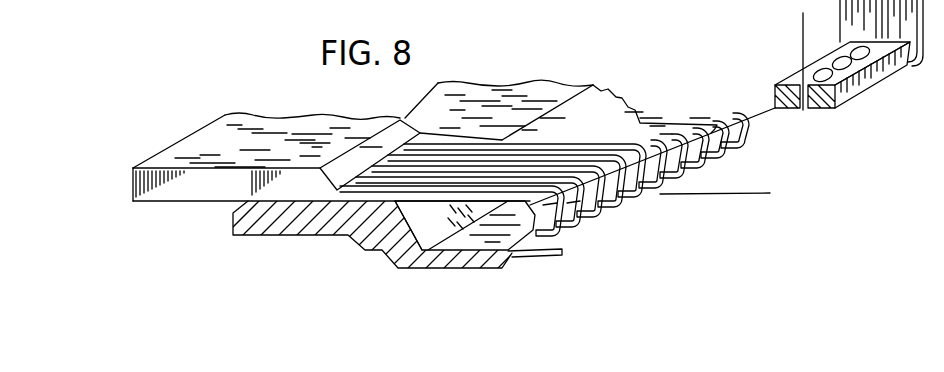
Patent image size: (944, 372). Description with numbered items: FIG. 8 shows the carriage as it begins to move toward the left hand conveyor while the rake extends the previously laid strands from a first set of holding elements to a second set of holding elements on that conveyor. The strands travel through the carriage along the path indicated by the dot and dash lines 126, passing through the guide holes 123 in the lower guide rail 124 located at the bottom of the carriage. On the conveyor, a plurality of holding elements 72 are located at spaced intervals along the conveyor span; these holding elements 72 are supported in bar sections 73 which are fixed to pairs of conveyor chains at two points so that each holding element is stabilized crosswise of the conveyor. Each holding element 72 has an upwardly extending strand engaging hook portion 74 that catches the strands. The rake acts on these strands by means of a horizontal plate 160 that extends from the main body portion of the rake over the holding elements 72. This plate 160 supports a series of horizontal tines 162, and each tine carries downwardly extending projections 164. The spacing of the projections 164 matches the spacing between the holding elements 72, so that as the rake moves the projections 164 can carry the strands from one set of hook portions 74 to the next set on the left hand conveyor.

The horizontal plate 160 is at (180, 149).
The bar section 73 is at (488, 106).
The downwardly extending projection 164 is at (630, 158).
The strand engaging hook portion 74 is at (592, 239).
The horizontal tine 162 is at (475, 166).
The holding element 72 is at (518, 272).
The guide hole 123 is at (812, 78).
The lower guide rail 124 is at (819, 110).
The dot and dash line 126 is at (800, 28).